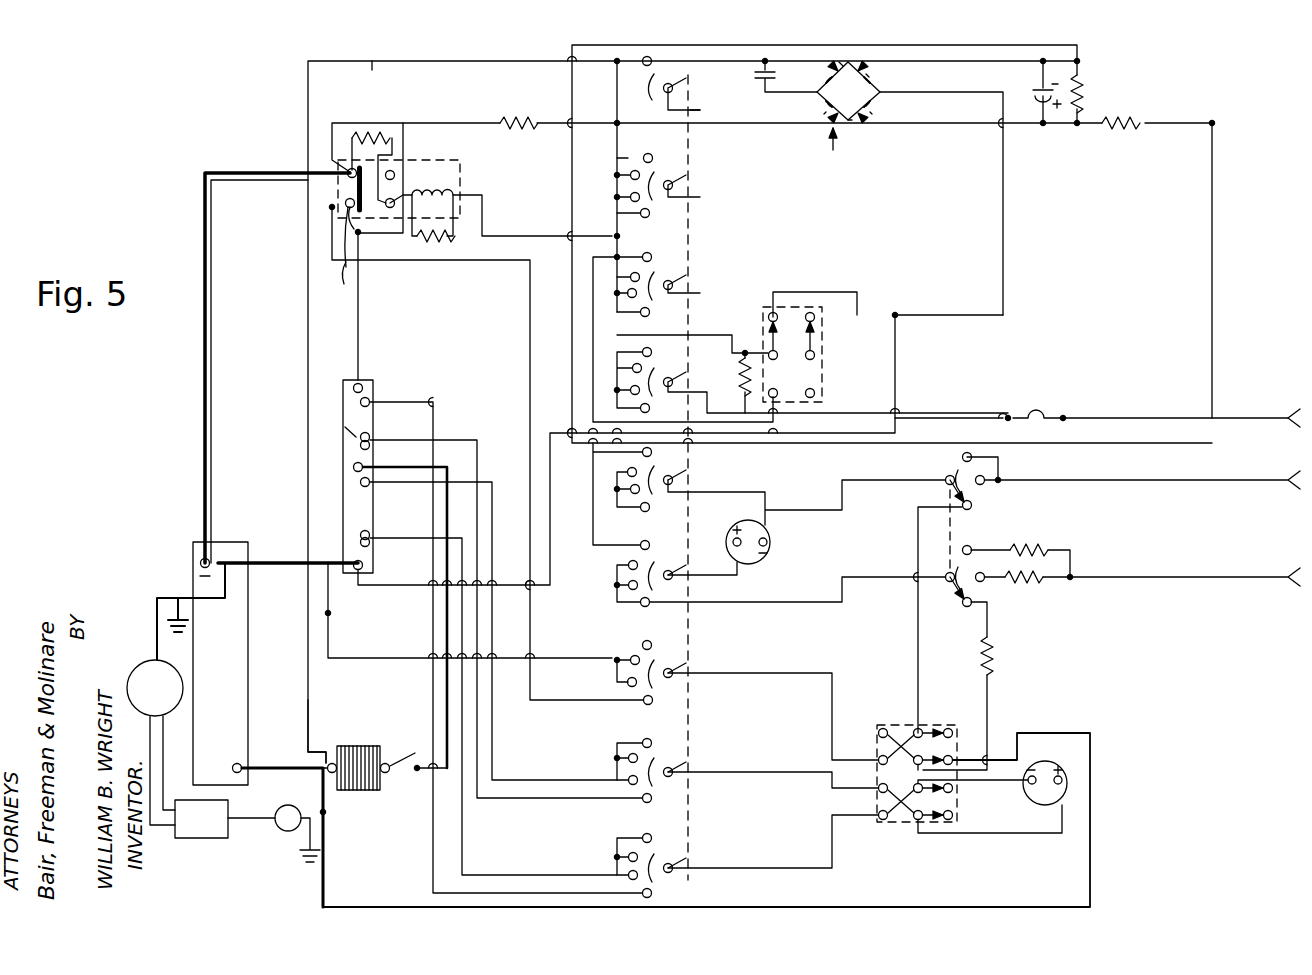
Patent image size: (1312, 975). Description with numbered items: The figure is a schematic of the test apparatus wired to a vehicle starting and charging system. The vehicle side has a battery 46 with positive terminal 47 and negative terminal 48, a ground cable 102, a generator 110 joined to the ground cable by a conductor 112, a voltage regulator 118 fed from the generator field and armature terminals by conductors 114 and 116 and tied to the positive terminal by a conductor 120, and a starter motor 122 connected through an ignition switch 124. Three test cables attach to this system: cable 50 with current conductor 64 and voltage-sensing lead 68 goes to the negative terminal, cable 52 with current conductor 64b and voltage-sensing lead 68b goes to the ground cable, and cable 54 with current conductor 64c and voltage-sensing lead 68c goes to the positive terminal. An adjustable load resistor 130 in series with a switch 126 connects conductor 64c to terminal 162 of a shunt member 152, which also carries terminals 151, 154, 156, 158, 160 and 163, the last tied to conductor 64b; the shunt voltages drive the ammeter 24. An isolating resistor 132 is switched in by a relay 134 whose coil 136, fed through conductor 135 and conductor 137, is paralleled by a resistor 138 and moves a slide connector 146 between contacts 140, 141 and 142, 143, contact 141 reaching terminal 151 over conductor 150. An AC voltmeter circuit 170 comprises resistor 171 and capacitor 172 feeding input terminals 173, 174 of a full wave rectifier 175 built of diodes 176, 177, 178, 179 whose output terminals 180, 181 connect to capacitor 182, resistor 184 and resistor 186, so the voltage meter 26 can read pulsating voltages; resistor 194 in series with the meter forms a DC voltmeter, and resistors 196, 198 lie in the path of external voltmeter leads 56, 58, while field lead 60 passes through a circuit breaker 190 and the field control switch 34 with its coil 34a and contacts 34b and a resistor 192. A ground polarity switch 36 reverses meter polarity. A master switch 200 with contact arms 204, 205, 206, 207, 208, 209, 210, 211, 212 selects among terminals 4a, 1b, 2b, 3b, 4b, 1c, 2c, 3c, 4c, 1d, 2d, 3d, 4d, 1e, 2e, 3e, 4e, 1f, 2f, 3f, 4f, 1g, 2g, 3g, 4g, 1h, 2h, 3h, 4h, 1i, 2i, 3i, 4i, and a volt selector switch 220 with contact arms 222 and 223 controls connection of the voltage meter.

The ammeter 24 is at (1047, 766).
The voltage meter 26 is at (770, 542).
The field control switch 34 is at (822, 355).
The relay coil 34a is at (794, 304).
The relay contacts 34b is at (816, 393).
The ground polarity switch 36 is at (928, 726).
The vehicle battery 46 is at (248, 688).
The positive terminal 47 is at (240, 762).
The negative terminal 48 is at (188, 562).
The cable 50 is at (222, 166).
The cable 52 is at (283, 556).
The cable 54 is at (278, 766).
The external voltmeter lead 56 is at (1186, 579).
The external voltmeter lead 58 is at (1218, 486).
The field lead 60 is at (1240, 418).
The current conductor 64 is at (250, 170).
The current conductor 64b is at (346, 562).
The current conductor 64c is at (310, 750).
The voltage-sensing lead 68 is at (256, 182).
The voltage-sensing lead 68b is at (290, 570).
The voltage-sensing lead 68c is at (292, 790).
The ground cable 102 is at (210, 598).
The generator 110 is at (172, 664).
The conductor 112 is at (172, 646).
The conductor 114 is at (148, 728).
The conductor 116 is at (164, 742).
The voltage regulator 118 is at (202, 838).
The conductor 120 is at (236, 820).
The starter motor 122 is at (292, 806).
The ignition switch 124 is at (258, 820).
The switch 126 is at (404, 774).
The adjustable load resistor 130 is at (364, 746).
The isolating resistor 132 is at (385, 134).
The relay 134 is at (455, 165).
The conductor 135 is at (344, 132).
The relay coil 136 is at (452, 190).
The conductor 137 is at (380, 68).
The resistor 138 is at (438, 235).
The relay contact 140 is at (350, 198).
The relay contact 141 is at (346, 266).
The relay contact 142 is at (394, 172).
The relay contact 143 is at (394, 200).
The slide connector 146 is at (366, 234).
The conductor 150 is at (354, 338).
The terminal 151 is at (356, 386).
The shunt member 152 is at (335, 432).
The terminal 154 is at (362, 402).
The terminal 156 is at (358, 442).
The terminal 158 is at (366, 486).
The terminal 160 is at (360, 538).
The terminal 162 is at (354, 470).
The terminal 163 is at (364, 565).
The AC voltmeter circuit 170 is at (748, 164).
The resistor 171 is at (530, 100).
The capacitor 172 is at (762, 72).
The input terminal 173 is at (828, 108).
The input terminal 174 is at (875, 102).
The full wave rectifier 175 is at (838, 151).
The diode 176 is at (832, 80).
The diode 177 is at (826, 118).
The diode 178 is at (873, 74).
The diode 179 is at (875, 114).
The output terminal 180 is at (840, 66).
The output terminal 181 is at (850, 118).
The capacitor 182 is at (1036, 90).
The resistor 184 is at (1082, 84).
The resistor 186 is at (1116, 126).
The circuit breaker 190 is at (1046, 416).
The resistor 192 is at (740, 380).
The resistor 194 is at (992, 662).
The resistor 196 is at (1026, 548).
The resistor 198 is at (1038, 582).
The master switch 200 is at (712, 263).
The contact arm 204 is at (717, 111).
The contact arm 205 is at (693, 191).
The contact arm 206 is at (693, 289).
The contact arm 207 is at (828, 390).
The contact arm 208 is at (690, 492).
The contact arm 209 is at (678, 588).
The contact arm 210 is at (678, 686).
The contact arm 211 is at (678, 788).
The contact arm 212 is at (678, 880).
The switch 220 is at (940, 548).
The contact arm 222 is at (946, 484).
The contact arm 223 is at (952, 600).
The terminal 4a is at (663, 64).
The terminal 4b is at (657, 146).
The terminal 3b is at (654, 169).
The terminal 2b is at (628, 198).
The terminal 1b is at (638, 214).
The terminal 4c is at (662, 256).
The terminal 3c is at (632, 278).
The terminal 2c is at (630, 298).
The terminal 1c is at (659, 319).
The terminal 4d is at (661, 346).
The terminal 3d is at (624, 355).
The terminal 2d is at (630, 392).
The terminal 1d is at (661, 413).
The terminal 4e is at (660, 451).
The terminal 3e is at (628, 470).
The terminal 2e is at (632, 494).
The terminal 1e is at (659, 515).
The terminal 4f is at (658, 544).
The terminal 3f is at (628, 566).
The terminal 2f is at (628, 586).
The terminal 1f is at (640, 606).
The terminal 4g is at (659, 632).
The terminal 3g is at (629, 658).
The terminal 2g is at (626, 682).
The terminal 1g is at (646, 704).
The terminal 4h is at (638, 742).
The terminal 3h is at (628, 754).
The terminal 2h is at (628, 778).
The terminal 1h is at (642, 802).
The terminal 4i is at (656, 829).
The terminal 3i is at (626, 857).
The terminal 2i is at (626, 875).
The terminal 1i is at (656, 896).